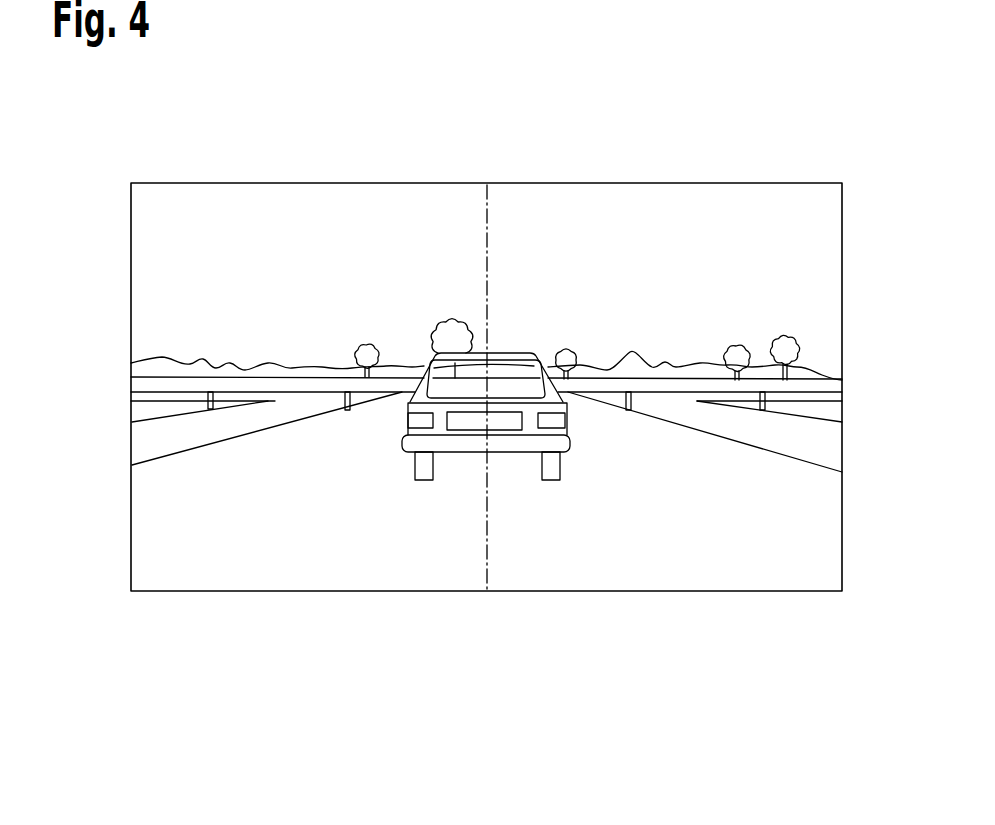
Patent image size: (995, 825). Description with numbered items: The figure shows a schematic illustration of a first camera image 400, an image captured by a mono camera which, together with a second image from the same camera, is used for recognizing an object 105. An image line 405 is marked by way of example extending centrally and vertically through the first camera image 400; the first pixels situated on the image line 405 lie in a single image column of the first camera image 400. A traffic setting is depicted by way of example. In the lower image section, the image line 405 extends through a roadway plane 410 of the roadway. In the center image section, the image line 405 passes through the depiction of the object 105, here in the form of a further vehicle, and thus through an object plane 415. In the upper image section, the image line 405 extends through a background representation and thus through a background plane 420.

The first camera image 400 is at (748, 170).
The image line 405 is at (488, 217).
The roadway plane 410 is at (438, 527).
The object plane 415 is at (430, 423).
The background plane 420 is at (428, 345).
The object 105 is at (311, 516).